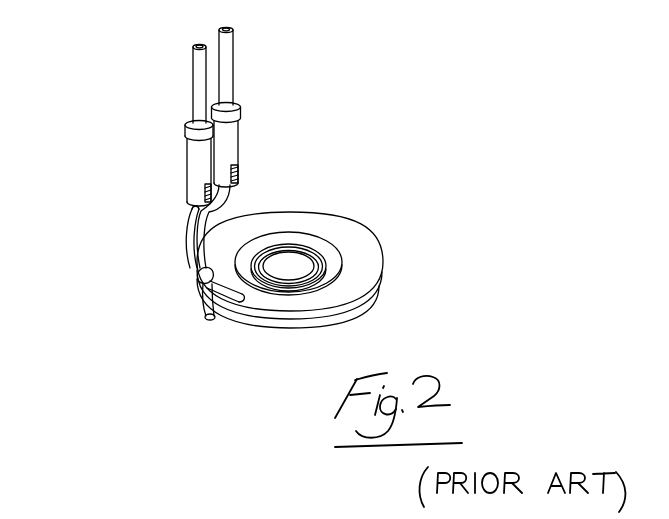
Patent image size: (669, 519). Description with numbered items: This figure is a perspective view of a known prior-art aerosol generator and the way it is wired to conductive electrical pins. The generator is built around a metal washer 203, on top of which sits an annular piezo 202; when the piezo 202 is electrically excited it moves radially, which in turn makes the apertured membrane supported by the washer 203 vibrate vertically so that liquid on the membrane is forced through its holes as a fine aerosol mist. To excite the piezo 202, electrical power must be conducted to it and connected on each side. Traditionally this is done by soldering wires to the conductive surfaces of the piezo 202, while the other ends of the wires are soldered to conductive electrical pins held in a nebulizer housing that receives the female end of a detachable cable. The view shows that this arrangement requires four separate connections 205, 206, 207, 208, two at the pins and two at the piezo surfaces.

The annular piezo 202 is at (347, 238).
The metal washer 203 is at (373, 302).
The connection 205 is at (237, 163).
The connection 206 is at (187, 203).
The connection 207 is at (203, 297).
The connection 208 is at (245, 293).